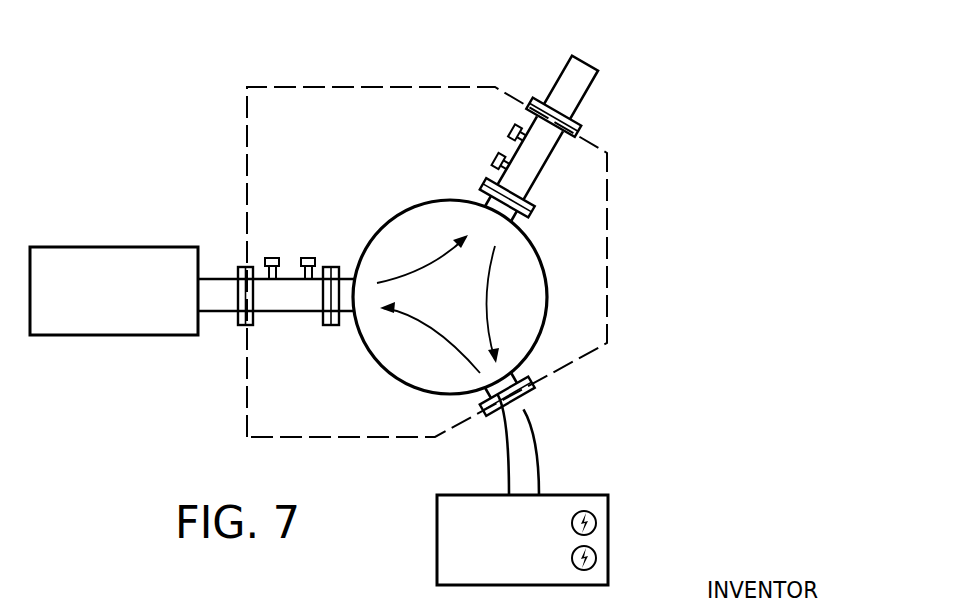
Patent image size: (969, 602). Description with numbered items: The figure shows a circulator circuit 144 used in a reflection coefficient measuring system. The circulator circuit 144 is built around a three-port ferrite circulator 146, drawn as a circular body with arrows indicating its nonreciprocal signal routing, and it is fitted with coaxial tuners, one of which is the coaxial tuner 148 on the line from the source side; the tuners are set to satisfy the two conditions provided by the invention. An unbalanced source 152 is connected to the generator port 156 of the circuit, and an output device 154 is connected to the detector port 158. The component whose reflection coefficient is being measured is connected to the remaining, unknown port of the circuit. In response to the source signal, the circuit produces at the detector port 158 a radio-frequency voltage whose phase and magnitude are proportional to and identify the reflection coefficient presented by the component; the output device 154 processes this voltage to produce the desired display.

The circulator circuit 144 is at (208, 178).
The three-port ferrite circulator 146 is at (411, 208).
The coaxial tuner 148 is at (297, 313).
The unbalanced source 152 is at (105, 337).
The output device 154 is at (608, 523).
The generator port 156 is at (238, 325).
The detector port 158 is at (537, 393).